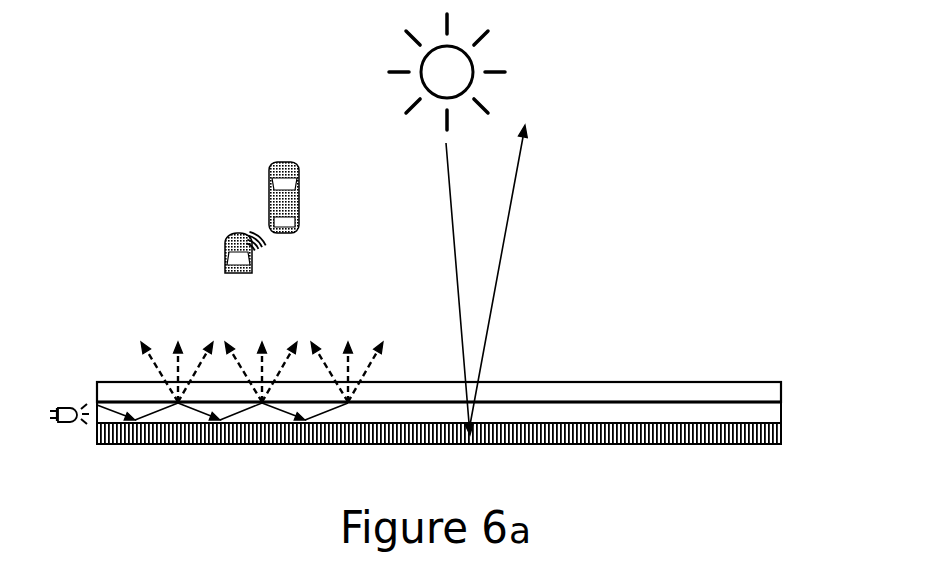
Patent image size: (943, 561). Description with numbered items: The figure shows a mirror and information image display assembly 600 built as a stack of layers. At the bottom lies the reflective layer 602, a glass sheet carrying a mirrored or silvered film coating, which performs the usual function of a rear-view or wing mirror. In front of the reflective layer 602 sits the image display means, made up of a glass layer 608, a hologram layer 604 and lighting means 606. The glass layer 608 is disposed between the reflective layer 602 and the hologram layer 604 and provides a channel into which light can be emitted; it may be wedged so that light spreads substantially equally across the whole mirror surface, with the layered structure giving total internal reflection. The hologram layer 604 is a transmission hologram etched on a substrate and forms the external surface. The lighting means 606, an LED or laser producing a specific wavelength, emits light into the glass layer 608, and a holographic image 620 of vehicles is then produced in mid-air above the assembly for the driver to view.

The mirror and information image display assembly 600 is at (111, 82).
The reflective layer 602 is at (688, 430).
The hologram layer 604 is at (630, 392).
The lighting means 606 is at (66, 405).
The glass layer 608 is at (750, 410).
The holographic image 620 is at (257, 212).